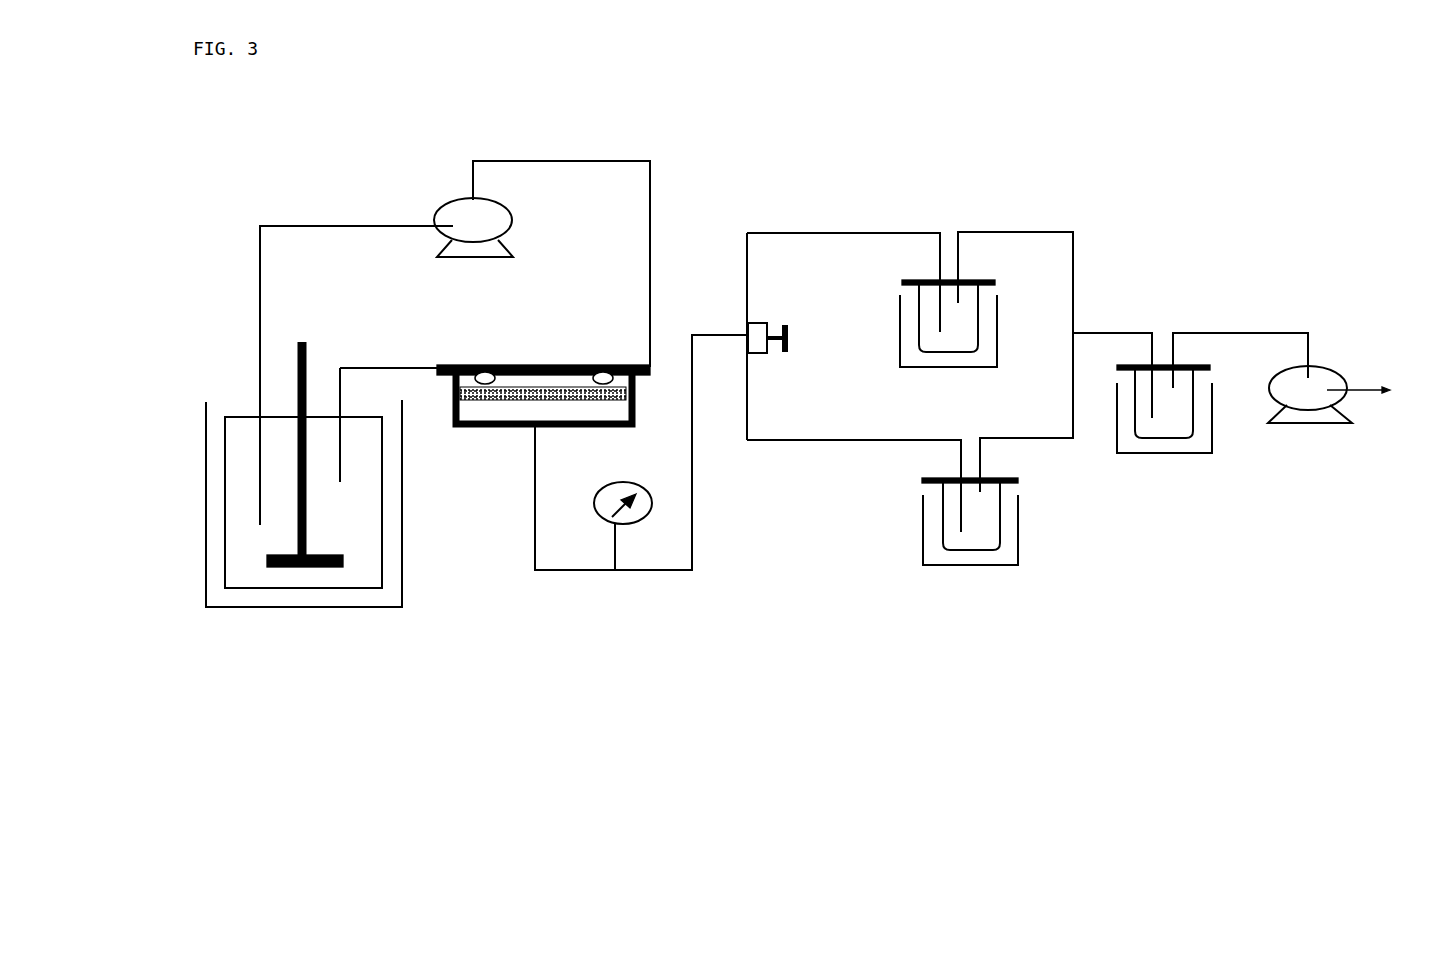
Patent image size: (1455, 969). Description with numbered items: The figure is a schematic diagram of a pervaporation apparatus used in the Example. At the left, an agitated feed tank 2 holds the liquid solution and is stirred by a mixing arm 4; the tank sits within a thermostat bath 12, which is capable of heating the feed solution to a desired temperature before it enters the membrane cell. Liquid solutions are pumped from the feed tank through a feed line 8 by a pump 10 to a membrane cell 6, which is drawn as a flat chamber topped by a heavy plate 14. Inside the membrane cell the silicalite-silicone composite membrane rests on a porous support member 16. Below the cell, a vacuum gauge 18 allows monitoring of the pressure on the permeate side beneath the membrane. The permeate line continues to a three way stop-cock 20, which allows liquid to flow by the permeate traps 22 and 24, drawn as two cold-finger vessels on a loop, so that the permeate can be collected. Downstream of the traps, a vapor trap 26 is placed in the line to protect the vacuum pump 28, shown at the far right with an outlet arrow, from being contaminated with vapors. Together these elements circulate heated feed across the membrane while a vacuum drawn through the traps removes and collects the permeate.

The feed tank 2 is at (227, 535).
The mixing arm 4 is at (300, 530).
The membrane cell 6 is at (450, 410).
The feed line 8 is at (260, 310).
The pump 10 is at (490, 203).
The thermostat bath 12 is at (402, 540).
The heater plate 14 is at (560, 367).
The porous support member 16 is at (607, 400).
The vacuum gauge 18 is at (645, 515).
The three way stop-cock 20 is at (757, 332).
The permeate trap 22 is at (993, 277).
The permeate trap 24 is at (1018, 538).
The vapor trap 26 is at (1208, 453).
The vacuum pump 28 is at (1343, 370).